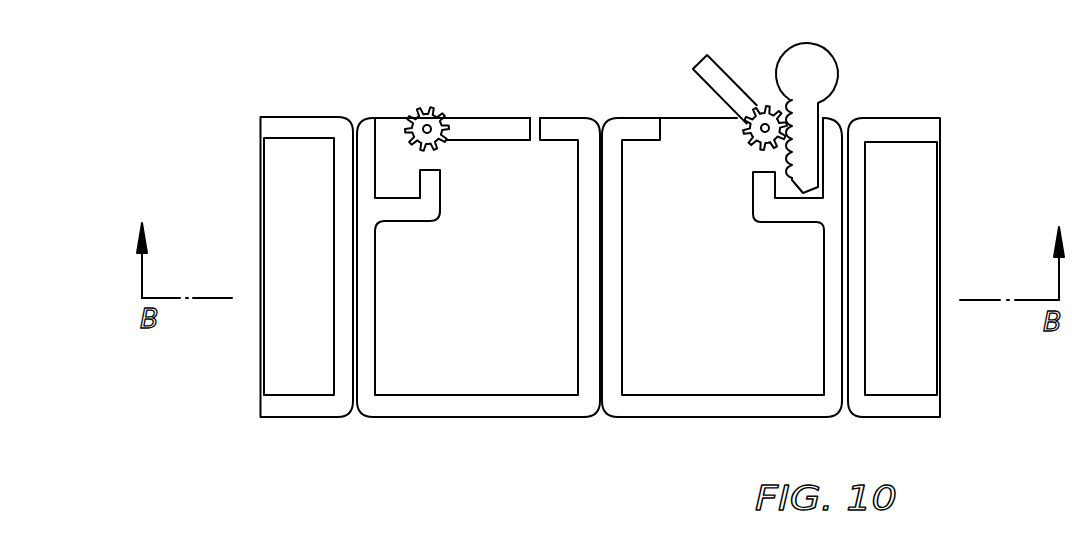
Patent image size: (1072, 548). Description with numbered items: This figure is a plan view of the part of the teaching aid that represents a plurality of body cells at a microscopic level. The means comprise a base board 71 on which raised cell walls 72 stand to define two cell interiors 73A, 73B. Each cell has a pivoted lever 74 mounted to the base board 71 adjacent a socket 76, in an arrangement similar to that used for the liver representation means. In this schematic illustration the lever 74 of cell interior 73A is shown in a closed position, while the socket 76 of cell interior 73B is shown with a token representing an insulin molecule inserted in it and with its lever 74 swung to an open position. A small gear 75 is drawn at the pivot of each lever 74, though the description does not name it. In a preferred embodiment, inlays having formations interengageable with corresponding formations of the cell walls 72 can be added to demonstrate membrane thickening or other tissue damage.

The base board 71 is at (912, 224).
The cell walls 72 is at (483, 407).
The cell interior 73A is at (476, 256).
The cell interior 73B is at (723, 256).
The pivoted lever 74 is at (477, 130).
The gear 75 is at (431, 125).
The socket 76 is at (395, 153).